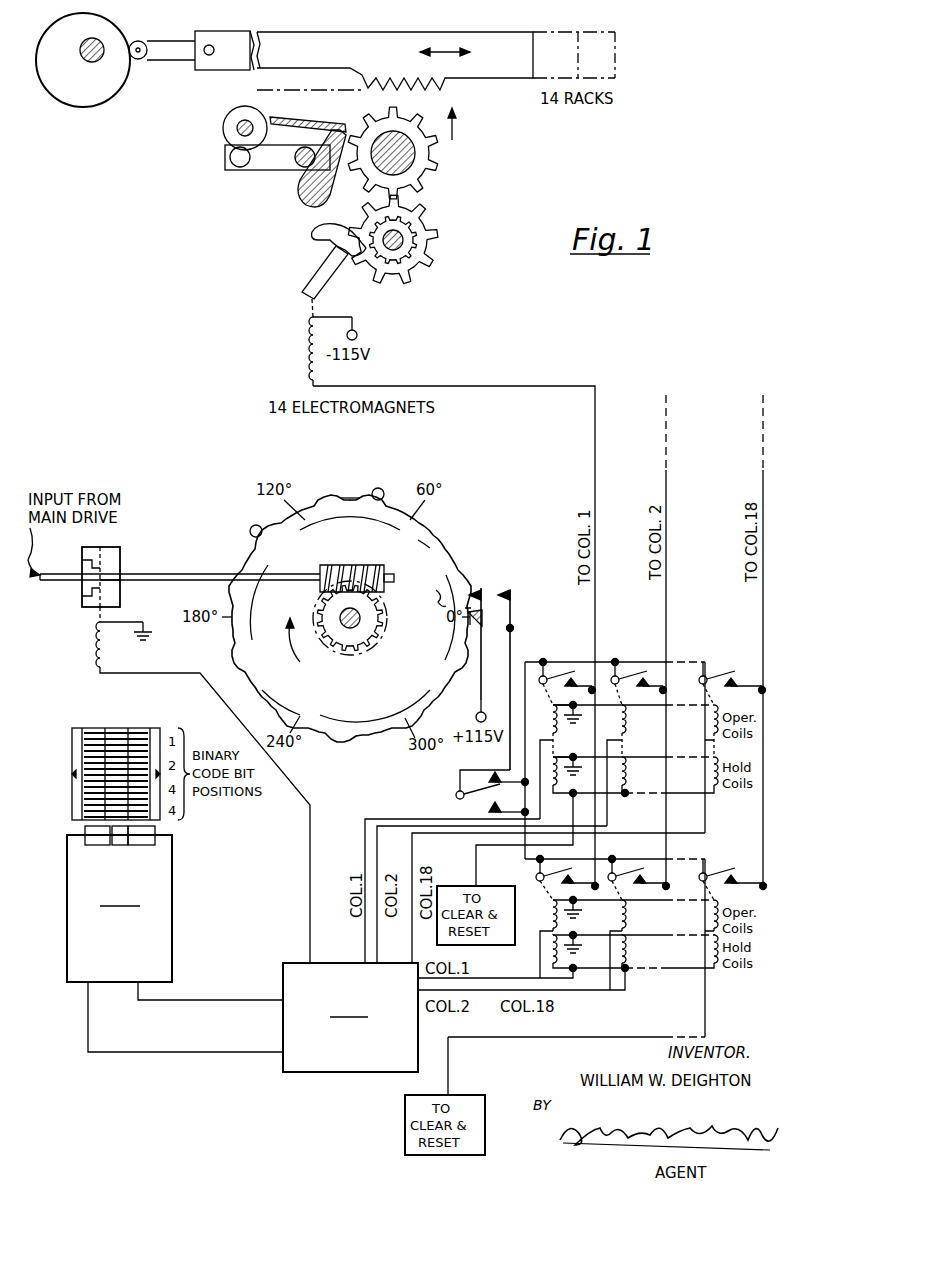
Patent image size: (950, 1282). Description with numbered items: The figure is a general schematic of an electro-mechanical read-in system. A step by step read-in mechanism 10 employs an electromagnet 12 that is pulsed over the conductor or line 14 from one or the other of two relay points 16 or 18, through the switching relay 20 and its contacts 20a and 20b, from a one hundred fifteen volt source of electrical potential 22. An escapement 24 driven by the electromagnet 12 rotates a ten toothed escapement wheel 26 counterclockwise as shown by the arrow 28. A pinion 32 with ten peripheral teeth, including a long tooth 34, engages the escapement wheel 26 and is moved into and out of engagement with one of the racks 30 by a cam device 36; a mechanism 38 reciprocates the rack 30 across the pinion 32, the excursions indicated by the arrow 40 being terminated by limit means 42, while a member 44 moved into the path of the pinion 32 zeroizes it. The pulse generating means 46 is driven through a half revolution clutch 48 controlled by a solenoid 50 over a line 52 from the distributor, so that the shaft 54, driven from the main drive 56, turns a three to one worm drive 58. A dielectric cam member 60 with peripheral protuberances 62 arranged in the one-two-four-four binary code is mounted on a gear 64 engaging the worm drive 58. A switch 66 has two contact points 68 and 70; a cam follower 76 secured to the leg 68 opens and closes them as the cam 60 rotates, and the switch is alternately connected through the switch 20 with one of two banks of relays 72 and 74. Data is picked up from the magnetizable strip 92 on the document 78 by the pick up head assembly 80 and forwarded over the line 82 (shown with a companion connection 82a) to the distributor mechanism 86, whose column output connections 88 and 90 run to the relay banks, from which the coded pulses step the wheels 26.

The read-in mechanism 10 is at (188, 73).
The electromagnet 12 is at (308, 350).
The conductor or line 14 is at (528, 386).
The relay point 16 is at (553, 670).
The relay point 18 is at (552, 868).
The switching relay 20 is at (458, 792).
The contacts 20a is at (497, 776).
The contacts 20b is at (488, 810).
The source of electrical potential 22 is at (357, 331).
The escapement 24 is at (306, 258).
The escapement wheel 26 is at (413, 272).
The arrow 28 is at (458, 208).
The rack 30 is at (500, 78).
The pinion 32 is at (432, 148).
The long tooth 34 is at (432, 175).
The cam device 36 is at (224, 128).
The mechanism 38 is at (74, 107).
The arrow 40 is at (462, 52).
The limit means 42 is at (303, 195).
The member 44 is at (337, 125).
The pulse generating means 46 is at (346, 498).
The half revolution clutch 48 is at (120, 560).
The solenoid 50 is at (96, 656).
The line 52 is at (308, 933).
The shaft 54 is at (185, 573).
The main drive 56 is at (58, 582).
The worm drive 58 is at (372, 567).
The dielectric cam member 60 is at (436, 552).
The peripheral protuberances 62 is at (378, 486).
The gear 64 is at (382, 628).
The switch 66 is at (516, 632).
The contact point 68 is at (482, 588).
The contact point 70 is at (511, 590).
The relay bank 72 is at (709, 674).
The relay bank 74 is at (670, 1006).
The cam follower 76 is at (482, 614).
The document 78 is at (65, 777).
The pick up head assembly 80 is at (165, 884).
The line 82 is at (246, 1000).
The control line 82a is at (232, 1052).
The distributor mechanism 86 is at (340, 1073).
The column output lines 88 is at (378, 948).
The column line 90 is at (540, 972).
The magnetizable band or strip 92 is at (136, 742).